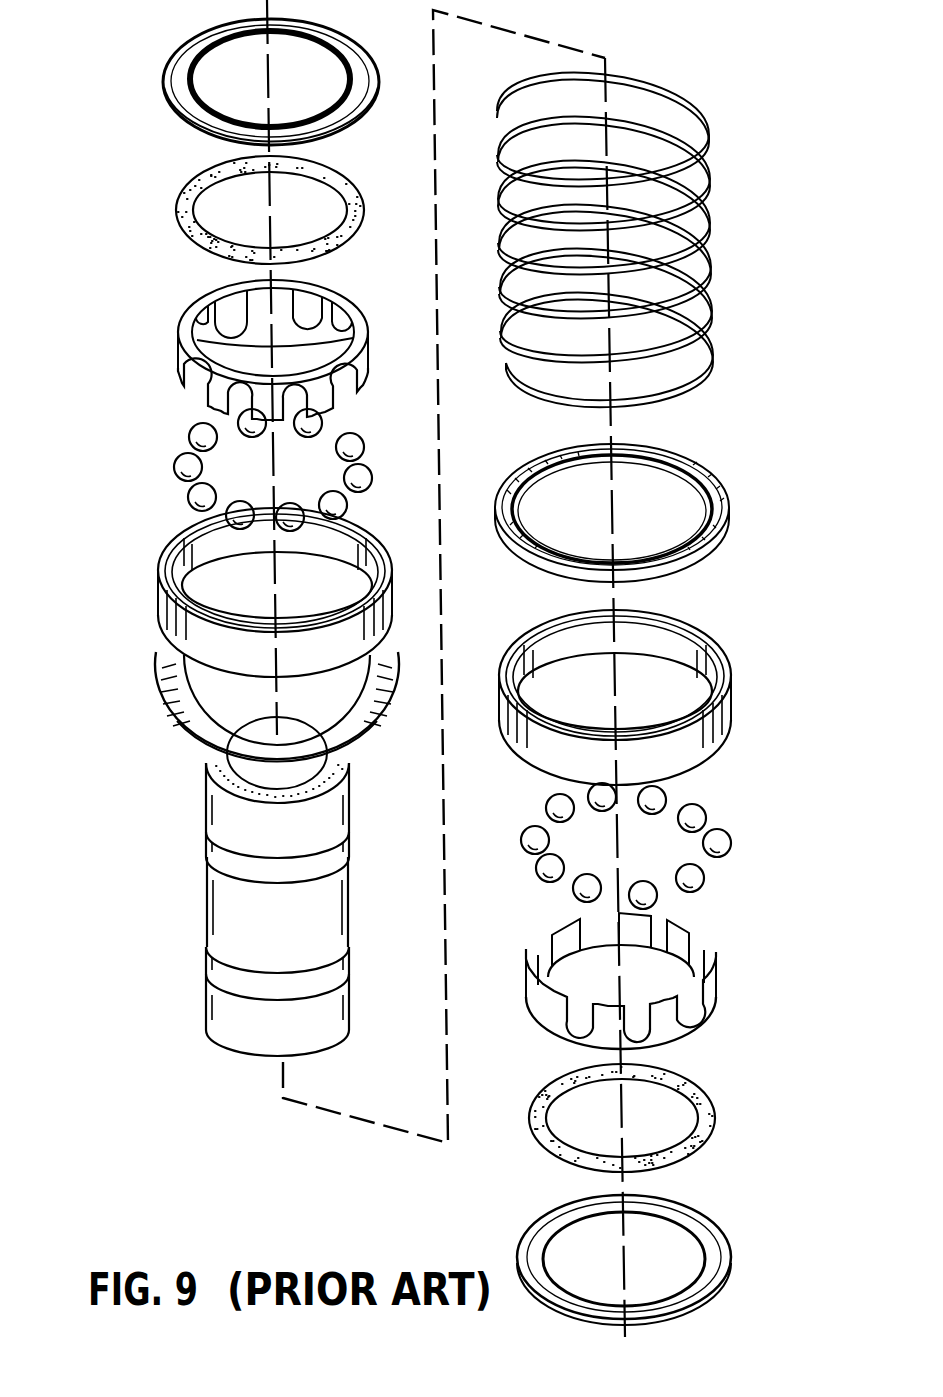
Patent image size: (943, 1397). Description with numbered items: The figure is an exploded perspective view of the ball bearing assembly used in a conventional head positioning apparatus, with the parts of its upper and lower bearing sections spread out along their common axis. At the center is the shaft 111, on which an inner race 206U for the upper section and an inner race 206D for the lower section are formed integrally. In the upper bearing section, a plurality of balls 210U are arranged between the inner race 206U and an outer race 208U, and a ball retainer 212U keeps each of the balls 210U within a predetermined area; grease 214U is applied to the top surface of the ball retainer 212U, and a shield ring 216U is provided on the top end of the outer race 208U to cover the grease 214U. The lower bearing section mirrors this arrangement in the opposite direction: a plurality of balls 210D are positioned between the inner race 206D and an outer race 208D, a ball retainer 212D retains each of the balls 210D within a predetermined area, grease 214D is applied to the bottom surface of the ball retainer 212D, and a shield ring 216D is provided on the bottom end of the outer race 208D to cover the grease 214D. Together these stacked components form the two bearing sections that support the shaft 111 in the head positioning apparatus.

The shield ring 216U is at (168, 73).
The grease 214U is at (185, 193).
The ball retainer 212U is at (192, 313).
The balls 210U is at (178, 467).
The outer race 208U is at (167, 610).
The inner race 206U is at (208, 833).
The shaft 111 is at (230, 908).
The inner race 206D is at (213, 955).
The outer race 208D is at (732, 687).
The balls 210D is at (693, 810).
The ball retainer 212D is at (713, 963).
The grease 214D is at (700, 1100).
The shield ring 216D is at (727, 1257).